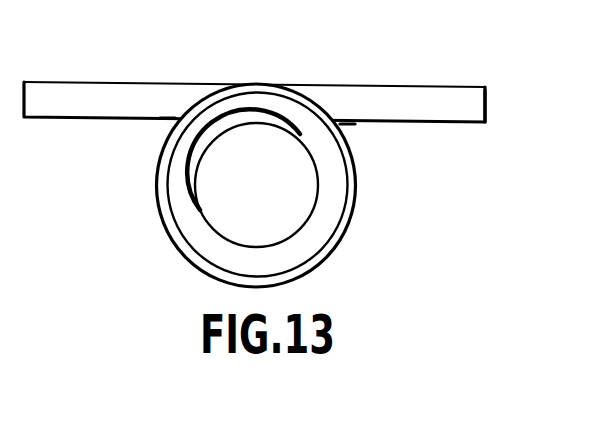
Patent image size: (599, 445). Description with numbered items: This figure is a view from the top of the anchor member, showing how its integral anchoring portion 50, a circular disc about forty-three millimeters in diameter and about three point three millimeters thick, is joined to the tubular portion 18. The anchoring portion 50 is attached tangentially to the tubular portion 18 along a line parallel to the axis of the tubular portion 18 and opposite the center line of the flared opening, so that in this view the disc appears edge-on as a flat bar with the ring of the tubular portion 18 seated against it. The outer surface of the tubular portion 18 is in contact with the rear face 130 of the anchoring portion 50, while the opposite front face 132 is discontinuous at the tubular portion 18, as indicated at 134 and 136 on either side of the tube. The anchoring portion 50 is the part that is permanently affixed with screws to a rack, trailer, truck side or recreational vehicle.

The anchoring portion 50 is at (140, 58).
The rear face 130 is at (410, 86).
The front face 132 is at (430, 124).
The discontinuity of front face 134 is at (175, 118).
The discontinuity of front face 136 is at (347, 125).
The tubular portion 18 is at (180, 204).